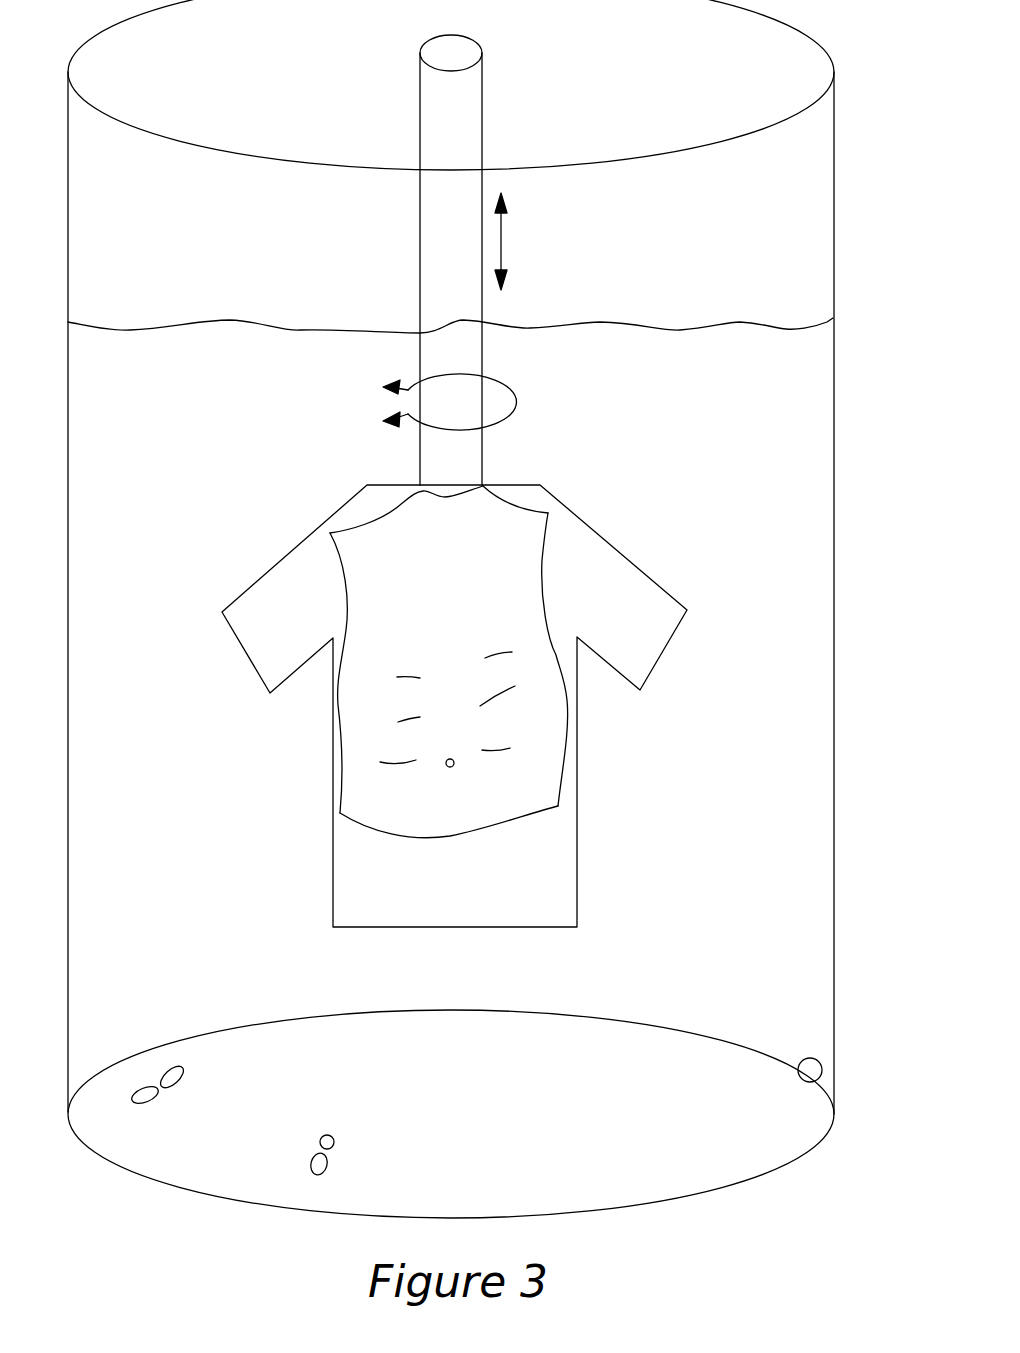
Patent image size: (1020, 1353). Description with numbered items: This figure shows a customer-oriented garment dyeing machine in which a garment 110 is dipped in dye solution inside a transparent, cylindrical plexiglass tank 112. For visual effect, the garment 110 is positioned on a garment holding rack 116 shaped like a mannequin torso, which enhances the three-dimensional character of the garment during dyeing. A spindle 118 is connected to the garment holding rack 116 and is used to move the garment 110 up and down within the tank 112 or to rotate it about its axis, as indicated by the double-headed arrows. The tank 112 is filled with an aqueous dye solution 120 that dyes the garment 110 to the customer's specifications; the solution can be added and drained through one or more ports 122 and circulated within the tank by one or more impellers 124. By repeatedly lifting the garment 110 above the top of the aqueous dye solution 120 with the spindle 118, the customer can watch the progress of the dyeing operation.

The garment 110 is at (618, 565).
The tank 112 is at (817, 371).
The garment holding rack 116 is at (535, 522).
The spindle 118 is at (430, 246).
The aqueous dye solution 120 is at (786, 329).
The port 122 is at (822, 1069).
The impeller 124 is at (311, 1175).